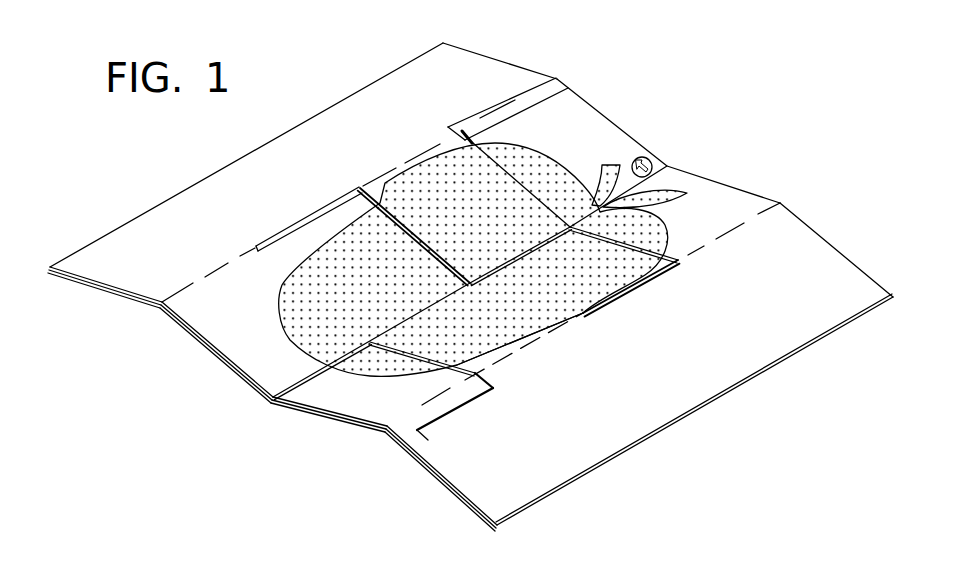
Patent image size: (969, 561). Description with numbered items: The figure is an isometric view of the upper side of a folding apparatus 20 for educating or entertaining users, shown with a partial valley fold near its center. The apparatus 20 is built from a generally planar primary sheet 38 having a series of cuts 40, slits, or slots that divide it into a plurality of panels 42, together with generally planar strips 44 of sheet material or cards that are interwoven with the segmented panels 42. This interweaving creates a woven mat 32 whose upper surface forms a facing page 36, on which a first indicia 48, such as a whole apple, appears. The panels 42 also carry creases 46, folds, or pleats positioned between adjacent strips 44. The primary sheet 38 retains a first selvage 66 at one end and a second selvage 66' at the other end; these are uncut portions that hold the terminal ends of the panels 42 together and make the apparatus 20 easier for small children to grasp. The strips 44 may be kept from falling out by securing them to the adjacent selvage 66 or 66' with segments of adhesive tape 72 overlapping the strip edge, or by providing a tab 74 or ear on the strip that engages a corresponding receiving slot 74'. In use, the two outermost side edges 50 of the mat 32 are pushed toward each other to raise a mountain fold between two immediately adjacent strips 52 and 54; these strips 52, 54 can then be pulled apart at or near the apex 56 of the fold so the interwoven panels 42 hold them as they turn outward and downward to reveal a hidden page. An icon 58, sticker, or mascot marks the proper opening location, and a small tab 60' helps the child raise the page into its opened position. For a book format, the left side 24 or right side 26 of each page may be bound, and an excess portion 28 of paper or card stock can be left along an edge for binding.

The apparatus 20 is at (180, 405).
The left side 24 is at (243, 159).
The right side 26 is at (700, 398).
The excess portion 28 is at (133, 219).
The woven mat 32 is at (250, 364).
The facing page 36 is at (596, 121).
The primary sheet 38 is at (814, 329).
The cuts 40 is at (470, 142).
The panels 42 is at (475, 259).
The strips 44 is at (577, 83).
The creases 46 is at (162, 302).
The first indicia 48 is at (410, 192).
The outermost side edges 50 is at (404, 128).
The adjacent strip 52 is at (297, 233).
The adjacent strip 54 is at (377, 408).
The apex 56 is at (278, 403).
The icon 58 is at (663, 162).
The tab 60' is at (642, 166).
The first selvage 66 is at (97, 270).
The second selvage 66' is at (484, 483).
The adhesive tape 72 is at (532, 92).
The tab 74 is at (455, 428).
The receiving slot 74' is at (523, 394).